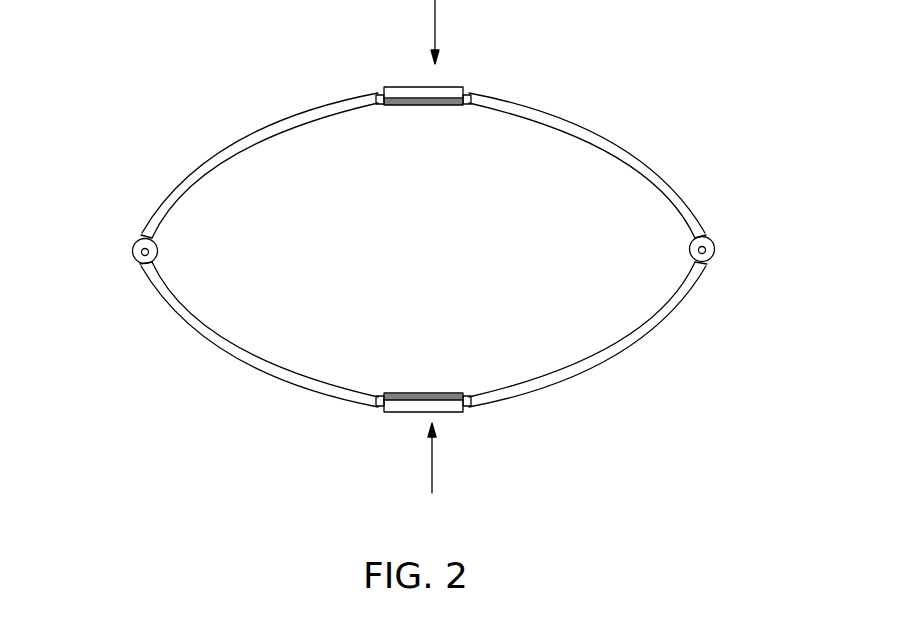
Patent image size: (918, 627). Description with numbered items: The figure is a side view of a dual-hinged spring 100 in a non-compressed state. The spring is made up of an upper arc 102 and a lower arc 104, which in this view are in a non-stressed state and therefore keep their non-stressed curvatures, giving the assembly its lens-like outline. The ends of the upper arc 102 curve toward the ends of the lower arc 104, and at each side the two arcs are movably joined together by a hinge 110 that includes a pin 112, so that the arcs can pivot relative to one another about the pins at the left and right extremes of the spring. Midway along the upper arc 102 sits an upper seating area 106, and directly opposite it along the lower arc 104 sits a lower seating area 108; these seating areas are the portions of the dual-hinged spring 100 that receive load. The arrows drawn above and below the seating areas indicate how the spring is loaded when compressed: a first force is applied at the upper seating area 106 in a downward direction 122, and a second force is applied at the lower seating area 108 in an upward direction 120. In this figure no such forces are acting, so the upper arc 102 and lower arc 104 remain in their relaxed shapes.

The dual-hinged spring 100 is at (618, 98).
The upper arc 102 is at (286, 113).
The lower arc 104 is at (245, 365).
The upper seating area 106 is at (397, 56).
The lower seating area 108 is at (392, 413).
The hinge 110 is at (131, 260).
The pin 112 is at (155, 250).
The upward direction 120 is at (433, 478).
The downward direction 122 is at (437, 8).